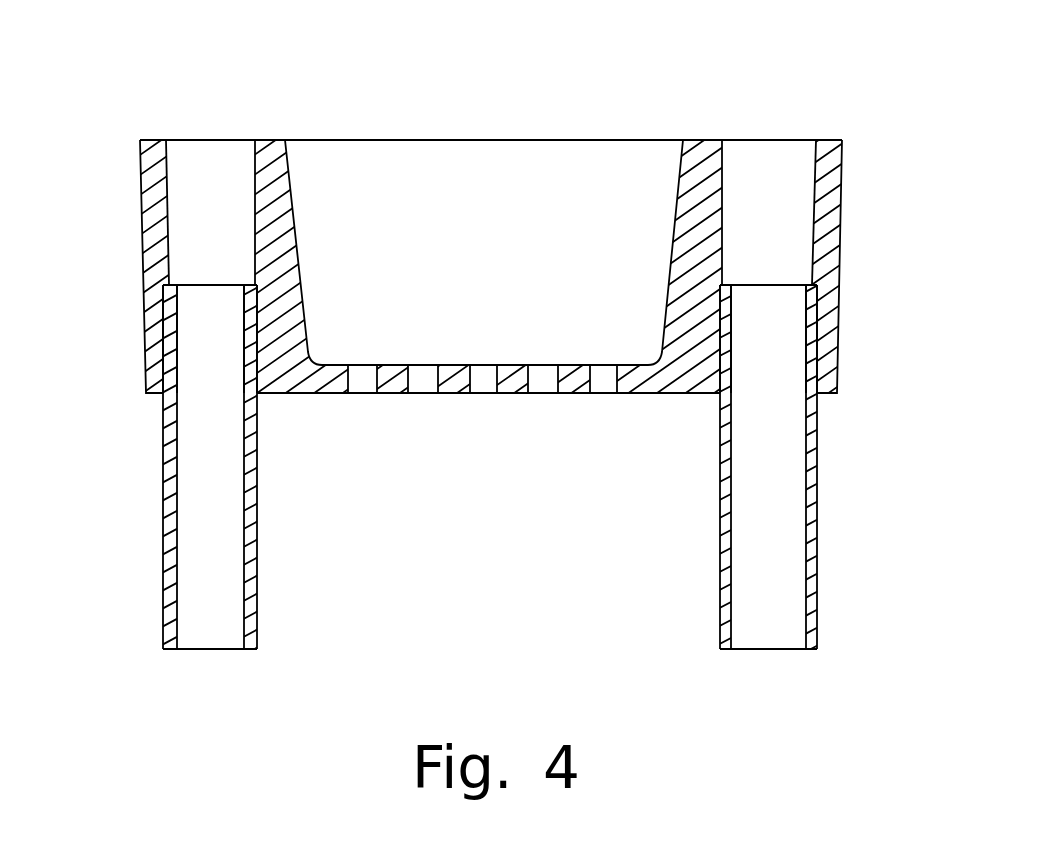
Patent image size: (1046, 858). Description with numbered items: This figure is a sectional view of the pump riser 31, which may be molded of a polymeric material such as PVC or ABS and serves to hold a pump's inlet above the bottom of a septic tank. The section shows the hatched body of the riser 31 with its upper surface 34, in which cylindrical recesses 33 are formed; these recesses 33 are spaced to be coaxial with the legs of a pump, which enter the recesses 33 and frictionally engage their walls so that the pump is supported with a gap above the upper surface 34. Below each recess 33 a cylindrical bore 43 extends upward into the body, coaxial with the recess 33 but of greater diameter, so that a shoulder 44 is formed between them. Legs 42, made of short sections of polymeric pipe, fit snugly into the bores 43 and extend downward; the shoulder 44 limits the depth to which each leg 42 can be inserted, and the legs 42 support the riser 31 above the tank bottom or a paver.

The pump riser 31 is at (846, 166).
The recess 33 is at (227, 150).
The upper surface 34 is at (152, 140).
The leg 42 is at (258, 517).
The bore 43 is at (166, 337).
The shoulder 44 is at (172, 284).